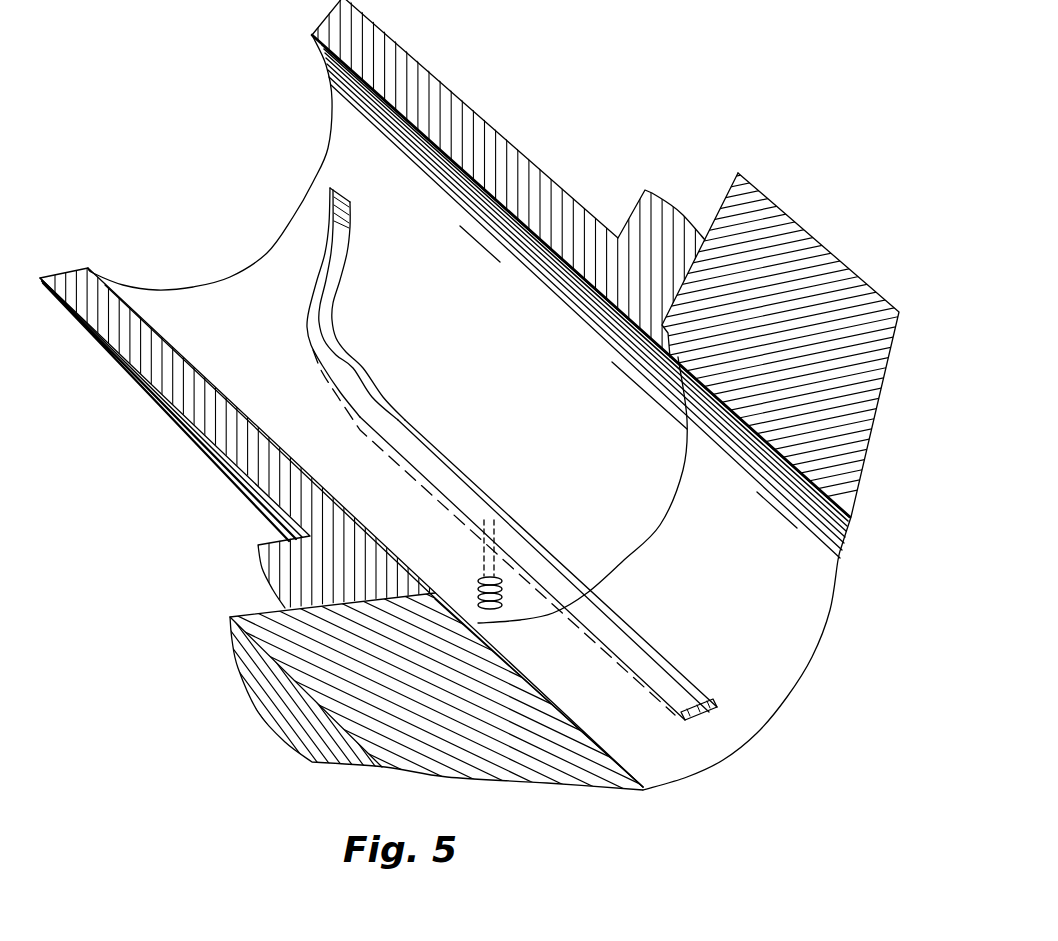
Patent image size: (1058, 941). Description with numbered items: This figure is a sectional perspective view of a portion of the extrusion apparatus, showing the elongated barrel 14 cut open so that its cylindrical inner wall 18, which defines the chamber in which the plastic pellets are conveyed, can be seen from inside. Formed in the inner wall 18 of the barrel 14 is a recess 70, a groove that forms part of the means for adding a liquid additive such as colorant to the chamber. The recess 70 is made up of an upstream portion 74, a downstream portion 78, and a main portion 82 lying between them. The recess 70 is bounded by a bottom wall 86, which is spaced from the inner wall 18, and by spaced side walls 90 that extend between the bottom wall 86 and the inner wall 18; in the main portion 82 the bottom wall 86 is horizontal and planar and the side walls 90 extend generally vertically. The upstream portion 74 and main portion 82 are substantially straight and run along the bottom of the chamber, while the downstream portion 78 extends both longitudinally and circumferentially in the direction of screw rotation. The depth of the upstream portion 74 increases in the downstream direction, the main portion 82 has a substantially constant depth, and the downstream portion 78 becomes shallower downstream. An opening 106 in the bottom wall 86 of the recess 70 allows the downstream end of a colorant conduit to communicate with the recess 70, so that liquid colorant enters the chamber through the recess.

The barrel 14 is at (493, 138).
The inner wall 18 is at (202, 288).
The recess 70 is at (654, 643).
The upstream portion 74 is at (707, 697).
The downstream portion 78 is at (349, 267).
The main portion 82 is at (424, 425).
The bottom wall 86 is at (362, 397).
The side walls 90 is at (317, 281).
The opening 106 is at (492, 516).